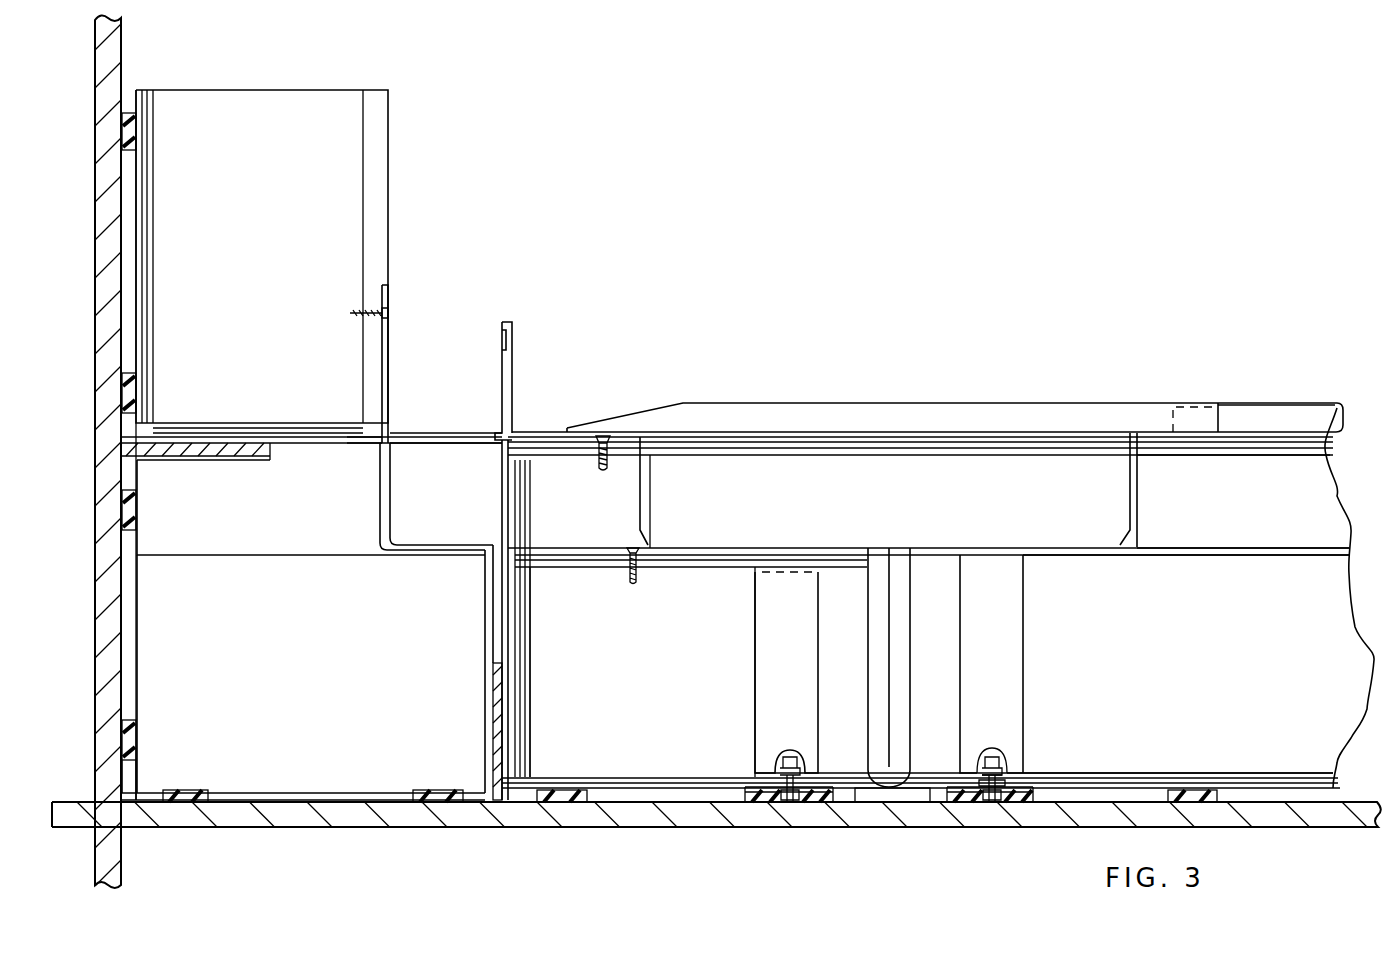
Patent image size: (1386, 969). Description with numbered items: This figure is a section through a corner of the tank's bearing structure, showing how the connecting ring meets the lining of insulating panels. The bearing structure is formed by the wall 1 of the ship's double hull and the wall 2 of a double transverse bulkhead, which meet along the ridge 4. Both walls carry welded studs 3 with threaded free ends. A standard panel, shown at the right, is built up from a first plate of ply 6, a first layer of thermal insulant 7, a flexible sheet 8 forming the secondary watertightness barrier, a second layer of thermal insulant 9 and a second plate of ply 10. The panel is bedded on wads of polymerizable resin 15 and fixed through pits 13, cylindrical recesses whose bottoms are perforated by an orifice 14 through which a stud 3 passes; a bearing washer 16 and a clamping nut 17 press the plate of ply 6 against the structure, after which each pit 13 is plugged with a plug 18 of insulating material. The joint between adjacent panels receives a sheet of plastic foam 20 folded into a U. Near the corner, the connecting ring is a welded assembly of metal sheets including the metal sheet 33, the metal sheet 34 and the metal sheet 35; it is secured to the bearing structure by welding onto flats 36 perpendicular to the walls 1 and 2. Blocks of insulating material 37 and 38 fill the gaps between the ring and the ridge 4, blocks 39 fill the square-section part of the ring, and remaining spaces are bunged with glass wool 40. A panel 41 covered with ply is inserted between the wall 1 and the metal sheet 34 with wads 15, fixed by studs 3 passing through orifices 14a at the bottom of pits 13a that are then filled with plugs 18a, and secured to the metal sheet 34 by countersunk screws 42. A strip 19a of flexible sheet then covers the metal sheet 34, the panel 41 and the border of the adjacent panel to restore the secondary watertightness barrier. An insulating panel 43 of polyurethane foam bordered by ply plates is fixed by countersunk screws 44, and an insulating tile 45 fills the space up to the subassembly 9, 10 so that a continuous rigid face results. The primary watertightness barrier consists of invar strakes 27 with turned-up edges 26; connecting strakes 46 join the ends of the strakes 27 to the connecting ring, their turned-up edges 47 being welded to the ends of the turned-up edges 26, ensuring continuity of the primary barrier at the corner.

The wall of the double hull 1 is at (305, 815).
The wall of the double transverse bulkhead 2 is at (100, 76).
The stud 3 is at (780, 805).
The ridge 4 is at (130, 800).
The first plate of ply 6 is at (1320, 786).
The first layer of thermal insulant 7 is at (1320, 646).
The flexible sheet 8 is at (1305, 556).
The second layer of thermal insulant 9 is at (1313, 500).
The second plate of ply 10 is at (1313, 440).
The pit 13 is at (1023, 652).
The pit 13a is at (755, 660).
The orifice 14 is at (990, 792).
The orifice 14a is at (765, 780).
The wad of polymerizable resin 15 is at (430, 797).
The bearing washer 16 is at (975, 778).
The clamping nut 17 is at (1010, 762).
The plug 18 is at (1005, 599).
The plug 18a is at (843, 745).
The strip of flexible sheet 19a is at (735, 545).
The sheet of plastic foam 20 is at (905, 583).
The turned-up edge 26 is at (1283, 400).
The metal strake 27 is at (1218, 413).
The metal sheet 33 is at (390, 357).
The metal sheet 34 is at (567, 560).
The metal sheet 35 is at (512, 366).
The flat 36 is at (190, 445).
The block of insulating material 37 is at (188, 668).
The block of insulating material 38 is at (180, 518).
The block of insulating material 39 is at (445, 478).
The glass wool 40 is at (313, 458).
The panel 41 is at (320, 225).
The countersunk screw 42 is at (350, 315).
The insulating panel 43 is at (567, 490).
The countersunk screw 44 is at (603, 458).
The insulating tile 45 is at (1032, 478).
The connecting strake 46 is at (795, 425).
The turned-up edge 47 is at (850, 413).